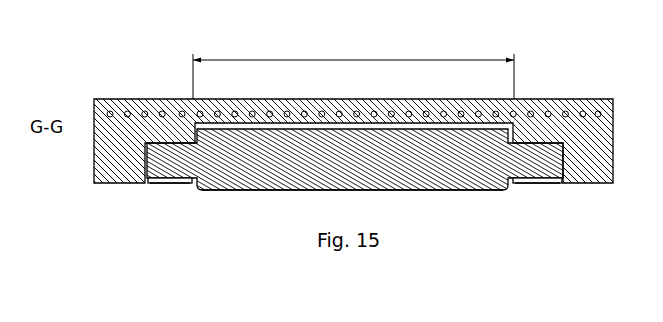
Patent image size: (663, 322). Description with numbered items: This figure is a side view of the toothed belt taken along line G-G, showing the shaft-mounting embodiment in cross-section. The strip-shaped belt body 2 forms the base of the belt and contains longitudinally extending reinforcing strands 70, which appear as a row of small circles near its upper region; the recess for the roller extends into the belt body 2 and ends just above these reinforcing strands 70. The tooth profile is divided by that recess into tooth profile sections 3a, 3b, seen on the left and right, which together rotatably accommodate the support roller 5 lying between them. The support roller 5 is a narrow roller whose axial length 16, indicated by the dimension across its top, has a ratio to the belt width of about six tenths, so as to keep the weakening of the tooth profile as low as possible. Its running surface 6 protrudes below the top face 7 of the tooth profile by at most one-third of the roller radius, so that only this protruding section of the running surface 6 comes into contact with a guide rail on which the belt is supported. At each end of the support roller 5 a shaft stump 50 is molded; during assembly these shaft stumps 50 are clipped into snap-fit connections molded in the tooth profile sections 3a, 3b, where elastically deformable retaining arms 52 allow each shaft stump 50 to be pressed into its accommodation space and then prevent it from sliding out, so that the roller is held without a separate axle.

The belt body 2 is at (596, 99).
The tooth profile section 3a is at (121, 176).
The tooth profile section 3b is at (574, 178).
The support roller 5 is at (226, 191).
The running surface 6 is at (272, 190).
The top face 7 is at (602, 183).
The axial length 16 is at (353, 69).
The shaft stump 50 is at (165, 183).
The retaining arm 52 is at (178, 183).
The reinforcing strand 70 is at (128, 110).